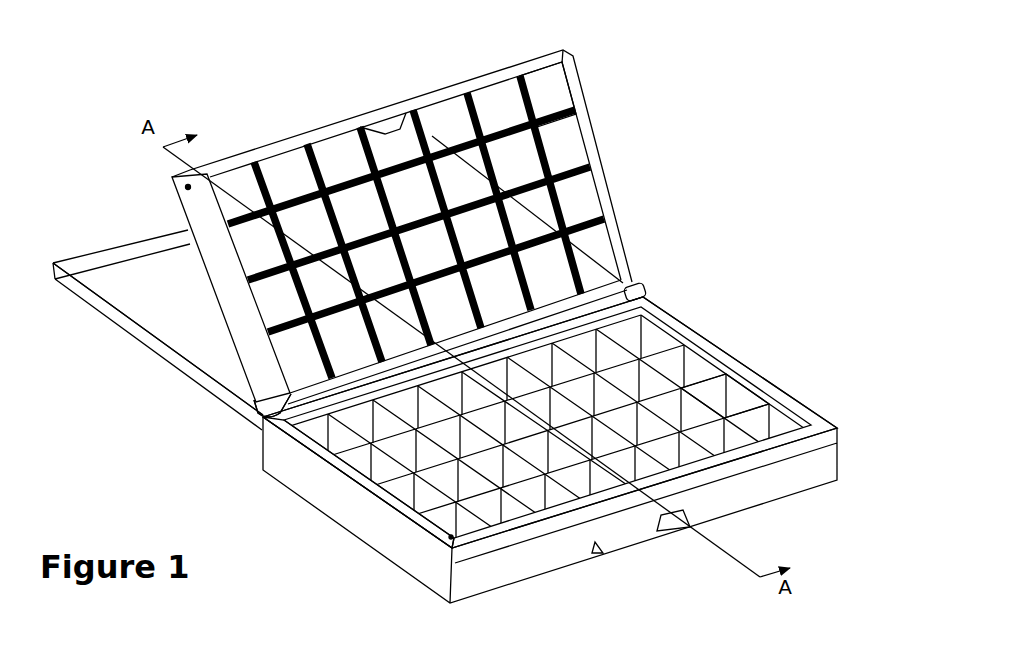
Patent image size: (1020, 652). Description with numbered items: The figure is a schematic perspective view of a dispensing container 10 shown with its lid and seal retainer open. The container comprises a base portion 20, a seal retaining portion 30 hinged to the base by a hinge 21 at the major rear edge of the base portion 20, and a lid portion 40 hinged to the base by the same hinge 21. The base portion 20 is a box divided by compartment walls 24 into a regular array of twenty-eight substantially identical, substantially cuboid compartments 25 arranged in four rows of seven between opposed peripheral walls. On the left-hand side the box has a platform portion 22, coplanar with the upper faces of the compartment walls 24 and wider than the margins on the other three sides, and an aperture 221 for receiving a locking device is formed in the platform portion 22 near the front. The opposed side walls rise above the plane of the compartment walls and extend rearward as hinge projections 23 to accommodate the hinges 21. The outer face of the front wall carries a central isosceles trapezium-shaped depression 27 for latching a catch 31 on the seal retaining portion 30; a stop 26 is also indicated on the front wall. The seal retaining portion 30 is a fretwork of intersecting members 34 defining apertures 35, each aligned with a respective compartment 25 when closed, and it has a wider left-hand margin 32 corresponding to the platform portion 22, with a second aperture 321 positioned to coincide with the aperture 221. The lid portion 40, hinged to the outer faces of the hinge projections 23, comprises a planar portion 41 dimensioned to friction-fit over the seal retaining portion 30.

The dispensing container 10 is at (752, 98).
The base portion 20 is at (298, 520).
The hinge 21 is at (645, 292).
The platform portion 22 is at (370, 480).
The aperture 221 is at (452, 537).
The hinge projections 23 is at (262, 428).
The compartment walls 24 is at (676, 357).
The compartments 25 is at (772, 420).
The stop 26 is at (596, 546).
The depression 27 is at (672, 528).
The seal retaining portion 30 is at (632, 190).
The catch 31 is at (393, 112).
The margin 32 is at (215, 284).
The second aperture 321 is at (180, 188).
The intersecting members 34 is at (470, 105).
The apertures 35 is at (556, 100).
The lid portion 40 is at (118, 348).
The planar portion 41 is at (188, 366).